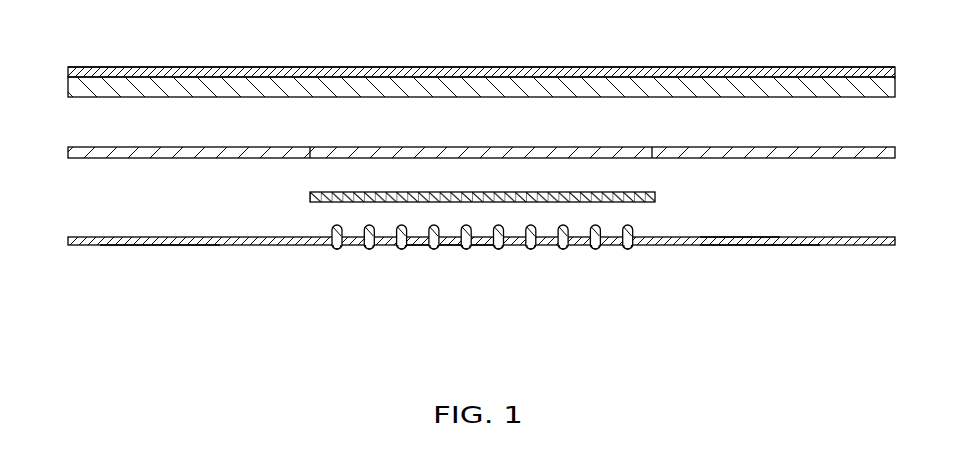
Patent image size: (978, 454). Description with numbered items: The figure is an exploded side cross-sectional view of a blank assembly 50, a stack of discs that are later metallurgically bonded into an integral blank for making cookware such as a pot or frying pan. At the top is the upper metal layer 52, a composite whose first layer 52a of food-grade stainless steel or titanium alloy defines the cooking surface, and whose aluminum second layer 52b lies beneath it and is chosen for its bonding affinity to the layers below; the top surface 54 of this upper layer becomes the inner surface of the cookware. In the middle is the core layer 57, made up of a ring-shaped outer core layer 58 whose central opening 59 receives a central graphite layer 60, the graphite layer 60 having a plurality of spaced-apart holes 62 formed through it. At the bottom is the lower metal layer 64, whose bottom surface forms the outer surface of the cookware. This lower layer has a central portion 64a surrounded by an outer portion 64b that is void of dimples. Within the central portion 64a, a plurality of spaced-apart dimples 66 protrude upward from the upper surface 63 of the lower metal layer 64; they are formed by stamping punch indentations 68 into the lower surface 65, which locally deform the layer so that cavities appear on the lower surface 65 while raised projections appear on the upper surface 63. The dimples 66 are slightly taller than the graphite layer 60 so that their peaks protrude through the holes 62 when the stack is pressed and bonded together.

The blank assembly 50 is at (62, 68).
The upper metal layer 52 is at (897, 68).
The first layer 52a is at (200, 74).
The second layer 52b is at (285, 88).
The top surface of top plate 54 is at (757, 67).
The core layer 57 is at (897, 147).
The outer core layer 58 is at (112, 159).
The central opening 59 is at (311, 146).
The graphite layer 60 is at (656, 196).
The holes 62 is at (403, 191).
The upper surface 63 is at (738, 236).
The lower metal layer 64 is at (850, 246).
The central portion 64a is at (452, 246).
The outer portion 64b is at (155, 246).
The lower surface 65 is at (757, 246).
The dimples 66 is at (333, 228).
The punch indentations 68 is at (337, 250).